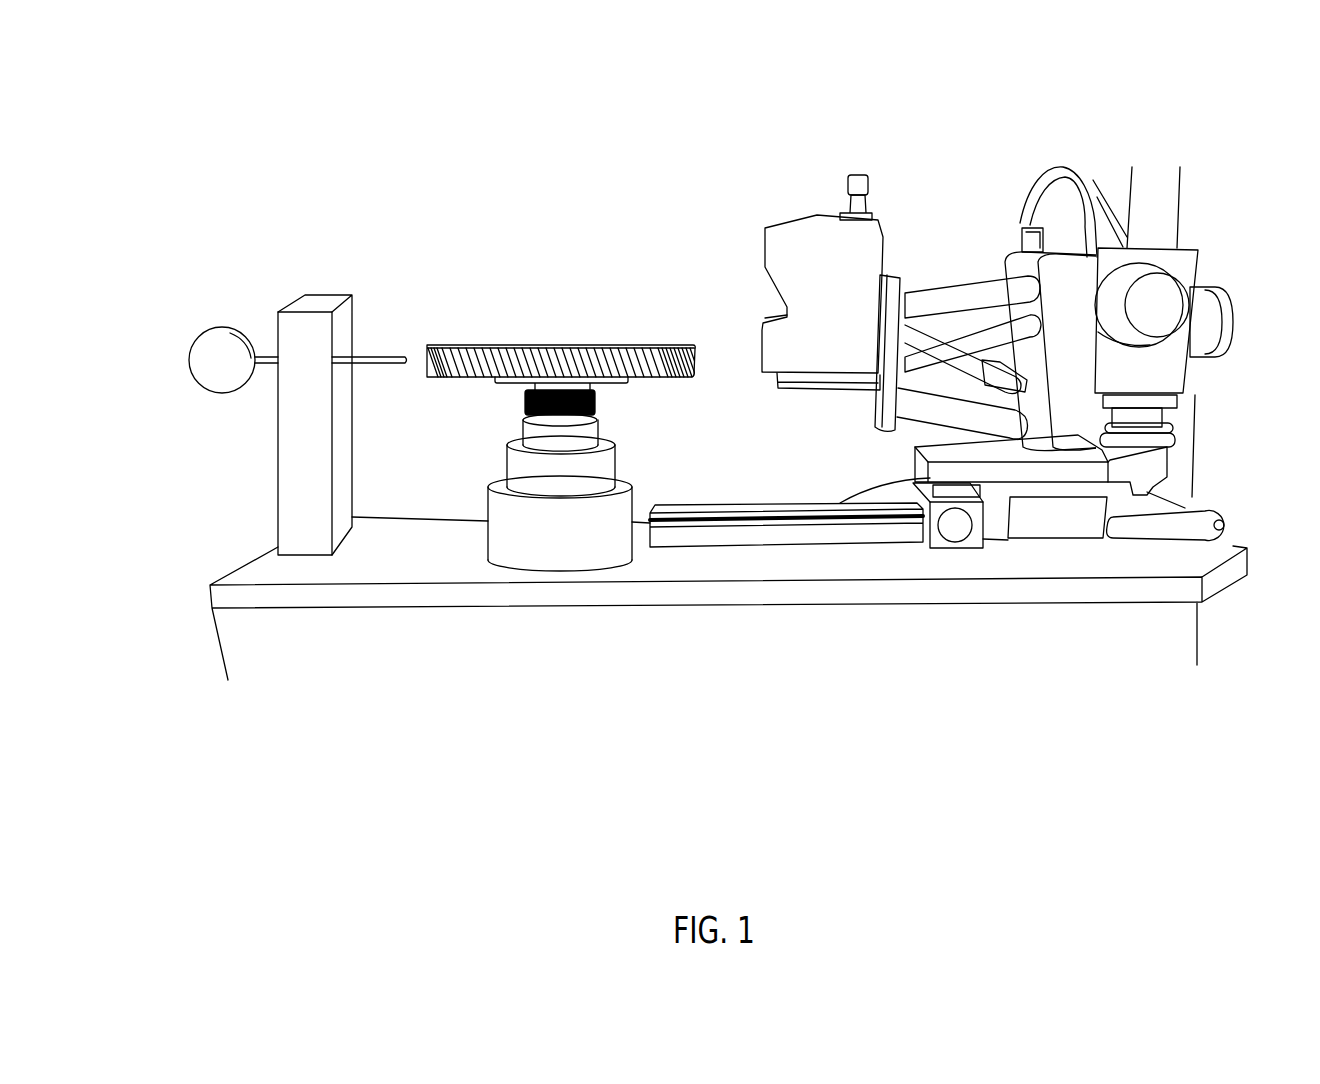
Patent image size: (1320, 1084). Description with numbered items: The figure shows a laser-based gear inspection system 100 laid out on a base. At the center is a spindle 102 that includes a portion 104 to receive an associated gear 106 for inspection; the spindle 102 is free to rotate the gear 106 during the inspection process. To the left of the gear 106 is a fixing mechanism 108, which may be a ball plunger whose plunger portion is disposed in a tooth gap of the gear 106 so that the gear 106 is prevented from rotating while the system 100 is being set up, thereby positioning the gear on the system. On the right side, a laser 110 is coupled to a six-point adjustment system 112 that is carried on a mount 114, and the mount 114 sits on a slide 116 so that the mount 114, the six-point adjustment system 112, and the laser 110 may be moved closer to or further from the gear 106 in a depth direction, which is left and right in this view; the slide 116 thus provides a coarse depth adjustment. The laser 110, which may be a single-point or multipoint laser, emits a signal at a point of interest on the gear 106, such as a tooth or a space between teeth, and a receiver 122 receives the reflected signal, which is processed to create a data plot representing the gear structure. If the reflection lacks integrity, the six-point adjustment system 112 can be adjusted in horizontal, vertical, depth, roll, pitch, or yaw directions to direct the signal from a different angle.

The gear inspection system 100 is at (298, 99).
The spindle 102 is at (651, 462).
The portion 104 is at (533, 437).
The gear 106 is at (547, 352).
The fixing mechanism 108 is at (188, 319).
The laser 110 is at (787, 235).
The six-point adjustment system 112 is at (1003, 152).
The mount 114 is at (1148, 468).
The slide 116 is at (790, 535).
The receiver 122 is at (746, 337).